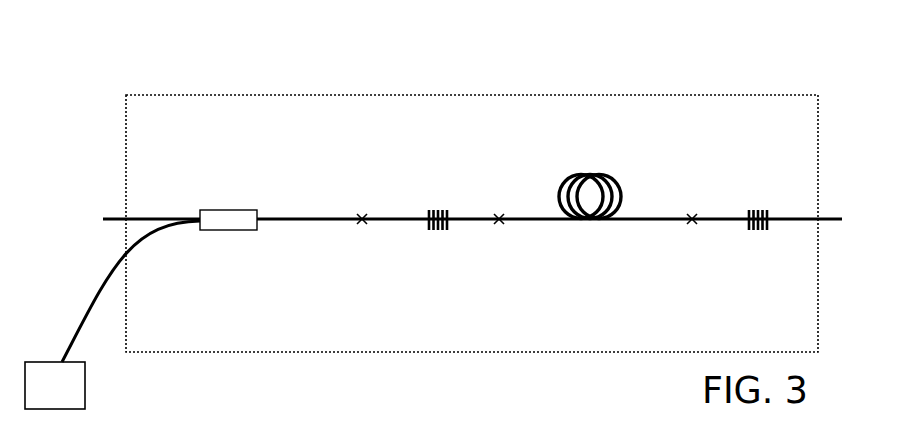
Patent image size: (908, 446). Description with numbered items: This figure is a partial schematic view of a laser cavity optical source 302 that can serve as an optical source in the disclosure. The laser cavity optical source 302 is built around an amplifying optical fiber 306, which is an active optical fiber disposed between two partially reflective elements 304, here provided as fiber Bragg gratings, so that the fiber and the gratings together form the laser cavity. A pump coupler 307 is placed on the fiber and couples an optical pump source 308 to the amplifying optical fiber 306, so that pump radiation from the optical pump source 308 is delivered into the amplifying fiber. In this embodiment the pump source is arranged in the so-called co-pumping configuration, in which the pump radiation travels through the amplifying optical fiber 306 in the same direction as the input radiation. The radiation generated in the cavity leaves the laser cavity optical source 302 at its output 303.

The laser cavity optical source 302 is at (337, 95).
The output 303 is at (836, 196).
The partially reflective elements 304 is at (436, 196).
The amplifying optical fiber 306 is at (552, 155).
The pump coupler 307 is at (233, 230).
The optical pump source 308 is at (112, 315).